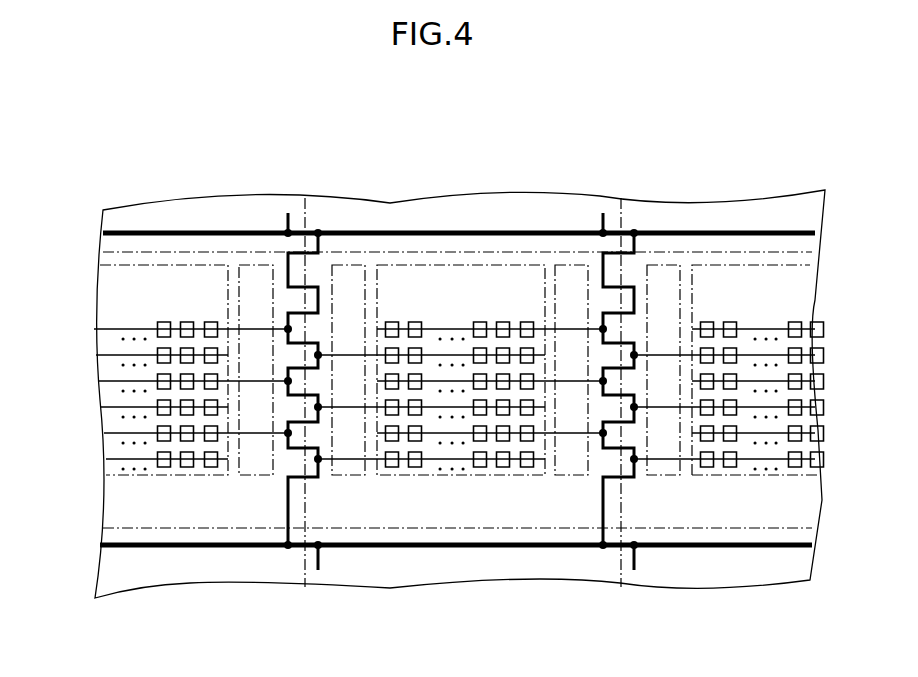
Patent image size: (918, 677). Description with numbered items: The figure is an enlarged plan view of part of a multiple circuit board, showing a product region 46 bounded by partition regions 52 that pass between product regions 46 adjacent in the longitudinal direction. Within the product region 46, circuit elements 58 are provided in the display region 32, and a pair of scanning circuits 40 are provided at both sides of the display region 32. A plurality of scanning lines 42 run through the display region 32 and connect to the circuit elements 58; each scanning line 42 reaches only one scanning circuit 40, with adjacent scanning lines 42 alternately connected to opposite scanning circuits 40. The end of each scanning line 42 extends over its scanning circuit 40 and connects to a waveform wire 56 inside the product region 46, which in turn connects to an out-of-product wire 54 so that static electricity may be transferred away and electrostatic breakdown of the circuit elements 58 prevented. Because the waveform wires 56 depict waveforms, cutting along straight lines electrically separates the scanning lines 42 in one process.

The display region 32 is at (163, 265).
The scanning circuit 40 is at (253, 477).
The scanning line 42 is at (108, 329).
The product region 46 is at (202, 516).
The partition region 52 is at (793, 218).
The out-of-product wire 54 is at (397, 233).
The waveform wire 56 is at (288, 507).
The circuit element 58 is at (208, 322).